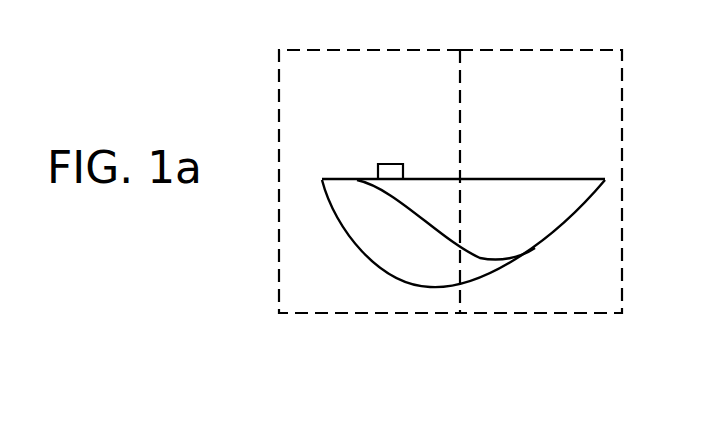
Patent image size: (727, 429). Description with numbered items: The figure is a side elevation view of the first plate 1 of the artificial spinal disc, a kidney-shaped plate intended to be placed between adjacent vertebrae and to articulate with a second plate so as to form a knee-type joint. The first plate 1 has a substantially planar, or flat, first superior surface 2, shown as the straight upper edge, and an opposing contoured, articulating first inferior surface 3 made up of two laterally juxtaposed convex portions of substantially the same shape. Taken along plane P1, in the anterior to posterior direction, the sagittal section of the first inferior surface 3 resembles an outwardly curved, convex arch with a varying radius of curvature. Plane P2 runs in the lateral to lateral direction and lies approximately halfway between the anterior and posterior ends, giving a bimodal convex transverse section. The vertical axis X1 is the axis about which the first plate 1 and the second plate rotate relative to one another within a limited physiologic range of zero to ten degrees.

The first plate 1 is at (392, 297).
The first superior surface 2 is at (547, 179).
The first inferior surface 3 is at (495, 272).
The plane P1 is at (345, 103).
The plane P2 is at (462, 85).
The vertical axis X1 is at (445, 105).